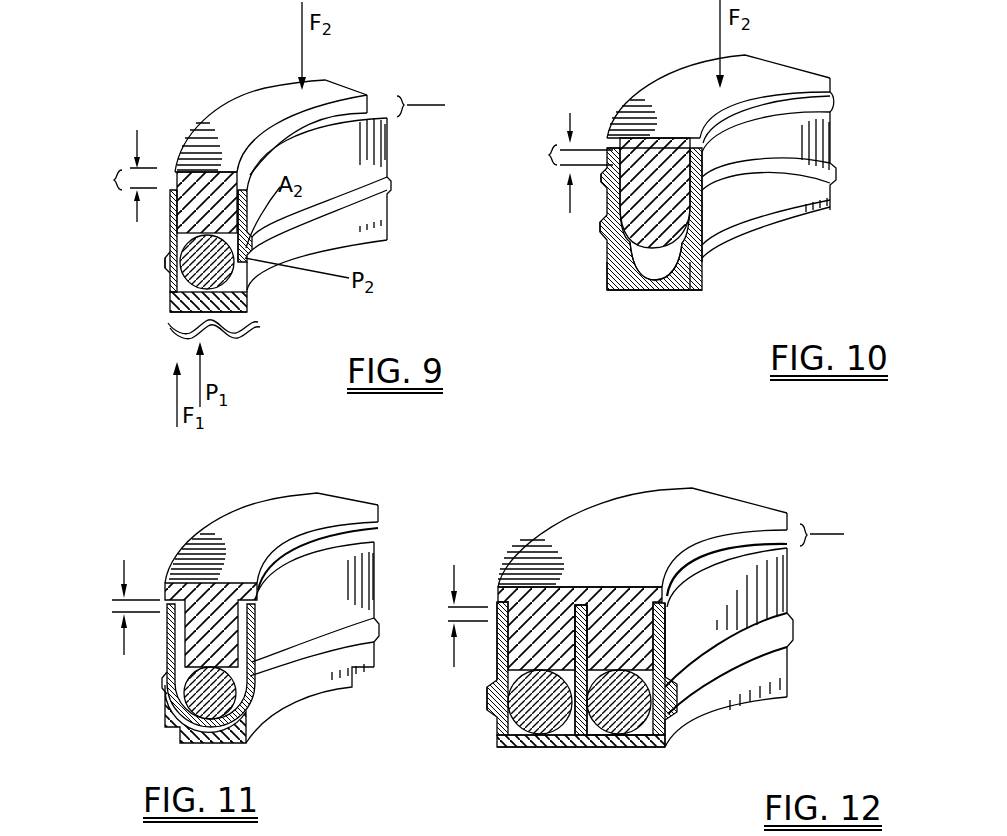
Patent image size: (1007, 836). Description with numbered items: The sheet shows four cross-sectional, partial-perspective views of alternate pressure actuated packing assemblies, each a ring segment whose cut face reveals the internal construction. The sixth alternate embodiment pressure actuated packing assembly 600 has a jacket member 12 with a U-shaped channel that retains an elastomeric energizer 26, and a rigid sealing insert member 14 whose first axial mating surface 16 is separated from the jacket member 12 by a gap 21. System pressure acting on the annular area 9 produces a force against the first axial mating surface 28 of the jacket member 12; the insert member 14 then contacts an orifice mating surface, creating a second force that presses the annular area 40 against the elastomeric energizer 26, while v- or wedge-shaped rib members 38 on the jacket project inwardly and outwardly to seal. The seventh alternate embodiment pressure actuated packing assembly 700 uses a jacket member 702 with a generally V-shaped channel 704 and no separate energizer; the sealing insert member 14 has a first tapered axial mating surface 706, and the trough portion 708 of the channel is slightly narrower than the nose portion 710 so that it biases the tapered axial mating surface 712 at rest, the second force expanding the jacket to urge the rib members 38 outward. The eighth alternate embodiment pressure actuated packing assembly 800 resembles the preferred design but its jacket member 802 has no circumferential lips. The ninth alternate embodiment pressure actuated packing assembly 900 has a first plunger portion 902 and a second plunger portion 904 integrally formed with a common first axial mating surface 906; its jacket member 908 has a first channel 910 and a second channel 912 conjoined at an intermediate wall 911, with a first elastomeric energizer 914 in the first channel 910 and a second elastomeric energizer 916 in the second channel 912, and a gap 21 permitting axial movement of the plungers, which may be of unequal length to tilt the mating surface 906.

In FIG. 9, the sixth alternate embodiment pressure actuated packing assembly 600 is at (152, 106).
In FIG. 10, the seventh alternate embodiment pressure actuated packing assembly 700 is at (664, 60).
In FIG. 11, the eighth alternate embodiment pressure actuated packing assembly 800 is at (191, 510).
In FIG. 12, the ninth alternate embodiment pressure actuated packing assembly 900 is at (575, 487).
In FIG. 9, the first axial mating surface 16 is at (285, 112).
In FIG. 10, the first axial mating surface 16 is at (752, 72).
In FIG. 9, the rigid sealing insert member 14 is at (270, 113).
In FIG. 10, the rigid sealing insert member 14 is at (660, 155).
In FIG. 11, the rigid sealing insert member 14 is at (288, 541).
In FIG. 9, the gap 21 is at (281, 157).
In FIG. 10, the gap 21 is at (548, 158).
In FIG. 11, the gap 21 is at (121, 607).
In FIG. 12, the gap 21 is at (648, 595).
In FIG. 9, the jacket member 12 is at (175, 228).
In FIG. 11, the jacket member 12 is at (205, 714).
In FIG. 12, the jacket member 12 is at (498, 734).
In FIG. 9, the annular area 40 is at (175, 248).
In FIG. 9, the rib members 38 is at (170, 262).
In FIG. 10, the rib members 38 is at (600, 247).
In FIG. 11, the rib members 38 is at (378, 642).
In FIG. 12, the rib members 38 is at (493, 708).
In FIG. 9, the elastomeric energizer 26 is at (245, 282).
In FIG. 11, the elastomeric energizer 26 is at (192, 693).
In FIG. 9, the first axial mating surface 28 is at (183, 312).
In FIG. 10, the first axial mating surface 28 is at (680, 292).
In FIG. 9, the annular area 9 is at (215, 340).
In FIG. 10, the jacket member 702 is at (605, 272).
In FIG. 10, the V-shaped channel 704 is at (655, 277).
In FIG. 10, the first tapered axial mating surface 706 is at (600, 200).
In FIG. 10, the trough portion 708 is at (700, 276).
In FIG. 10, the nose portion 710 is at (610, 278).
In FIG. 10, the first tapered axial mating surface 712 is at (722, 243).
In FIG. 11, the jacket member 802 is at (165, 640).
In FIG. 12, the first plunger portion 902 is at (547, 608).
In FIG. 12, the second plunger portion 904 is at (751, 630).
In FIG. 12, the first axial mating surface 906 is at (702, 514).
In FIG. 12, the jacket member 908 is at (496, 640).
In FIG. 12, the first channel 910 is at (498, 687).
In FIG. 12, the intermediate wall 911 is at (593, 722).
In FIG. 12, the second channel 912 is at (670, 712).
In FIG. 12, the first elastomeric energizer 914 is at (552, 727).
In FIG. 12, the second elastomeric energizer 916 is at (649, 747).